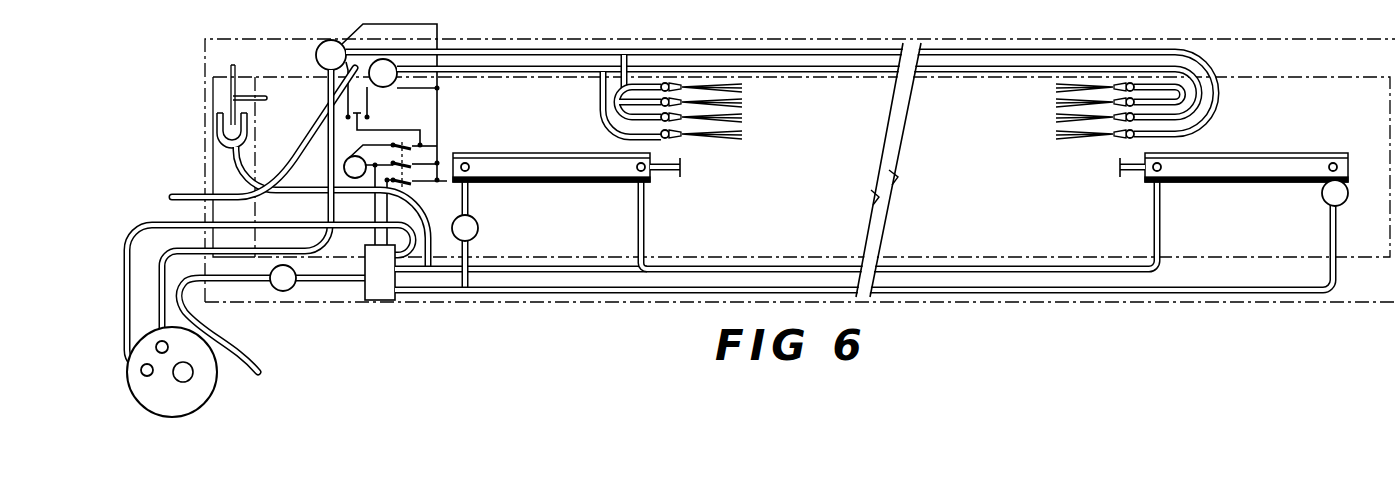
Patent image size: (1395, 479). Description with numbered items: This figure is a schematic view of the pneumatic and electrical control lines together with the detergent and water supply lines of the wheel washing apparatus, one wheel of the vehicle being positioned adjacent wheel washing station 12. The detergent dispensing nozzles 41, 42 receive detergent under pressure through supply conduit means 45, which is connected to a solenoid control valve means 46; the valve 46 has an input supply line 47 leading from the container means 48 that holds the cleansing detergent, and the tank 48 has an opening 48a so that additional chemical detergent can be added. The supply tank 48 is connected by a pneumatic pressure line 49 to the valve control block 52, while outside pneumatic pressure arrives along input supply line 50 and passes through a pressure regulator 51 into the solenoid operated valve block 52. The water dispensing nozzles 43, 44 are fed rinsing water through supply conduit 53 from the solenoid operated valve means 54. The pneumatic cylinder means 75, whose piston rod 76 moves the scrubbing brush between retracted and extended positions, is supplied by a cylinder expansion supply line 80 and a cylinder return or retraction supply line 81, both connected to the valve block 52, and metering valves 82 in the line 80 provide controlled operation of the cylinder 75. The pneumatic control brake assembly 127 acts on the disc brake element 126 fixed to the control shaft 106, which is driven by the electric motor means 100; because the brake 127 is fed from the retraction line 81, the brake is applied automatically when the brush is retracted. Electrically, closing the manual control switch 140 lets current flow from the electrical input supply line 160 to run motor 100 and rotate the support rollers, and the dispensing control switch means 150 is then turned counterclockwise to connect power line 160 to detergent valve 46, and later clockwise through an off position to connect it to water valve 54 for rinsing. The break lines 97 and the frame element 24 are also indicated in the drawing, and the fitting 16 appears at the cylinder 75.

The wheel washing station 12 is at (611, 6).
The heater fitting 16 is at (673, 178).
The frame member 24 is at (739, 7).
The detergent dispensing nozzle 41 is at (713, 88).
The detergent dispensing nozzle 42 is at (722, 119).
The water dispensing nozzle 43 is at (710, 108).
The water dispensing nozzle 44 is at (697, 136).
The supply conduit means 45 is at (845, 60).
The solenoid control valve means 46 is at (326, 41).
The input supply line 47 is at (165, 251).
The container means 48 is at (180, 418).
The opening 48a is at (190, 378).
The pneumatic pressure line 49 is at (148, 220).
The input supply line 50 is at (261, 364).
The pressure regulator 51 is at (288, 291).
The valve control block 52 is at (383, 297).
The supply conduit 53 is at (890, 73).
The solenoid operated valve means 54 is at (386, 56).
The pneumatic cylinder means 75 is at (572, 157).
The piston rod 76 is at (1128, 179).
The cylinder expansion supply line 80 is at (838, 287).
The cylinder return or retraction supply line 81 is at (775, 265).
The metering valve 82 is at (478, 224).
The break line 97 is at (688, 148).
The electric motor means 100 is at (344, 169).
The control shaft 106 is at (267, 96).
The disc brake element 126 is at (237, 66).
The pneumatic control brake assembly 127 is at (250, 128).
The manual control switch 140 is at (411, 184).
The dispensing control switch means 150 is at (364, 127).
The electrical input supply line 160 is at (448, 178).